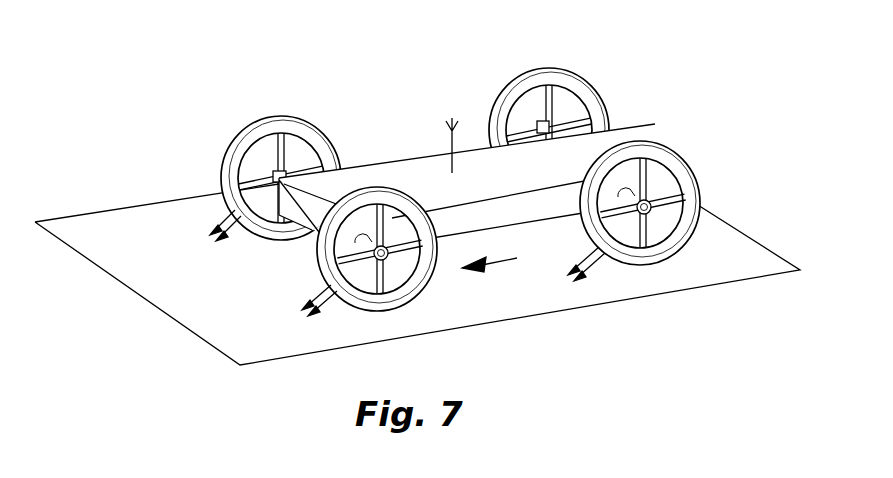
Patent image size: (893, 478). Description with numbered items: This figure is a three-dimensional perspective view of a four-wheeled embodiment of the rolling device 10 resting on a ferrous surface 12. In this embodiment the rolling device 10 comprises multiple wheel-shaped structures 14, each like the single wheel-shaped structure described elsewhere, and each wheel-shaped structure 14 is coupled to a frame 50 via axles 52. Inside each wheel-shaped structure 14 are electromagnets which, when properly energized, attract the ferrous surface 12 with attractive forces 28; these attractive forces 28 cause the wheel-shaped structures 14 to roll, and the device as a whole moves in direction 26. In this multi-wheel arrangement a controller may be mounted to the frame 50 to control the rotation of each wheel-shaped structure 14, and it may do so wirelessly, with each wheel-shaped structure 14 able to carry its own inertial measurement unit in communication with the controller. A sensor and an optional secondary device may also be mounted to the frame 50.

The rolling device 10 is at (151, 59).
The ferrous surface 12 is at (142, 223).
The wheel-shaped structure 14 is at (240, 142).
The direction 26 is at (500, 263).
The attractive forces 28 is at (308, 291).
The frame 50 is at (496, 214).
The axles 52 is at (677, 213).